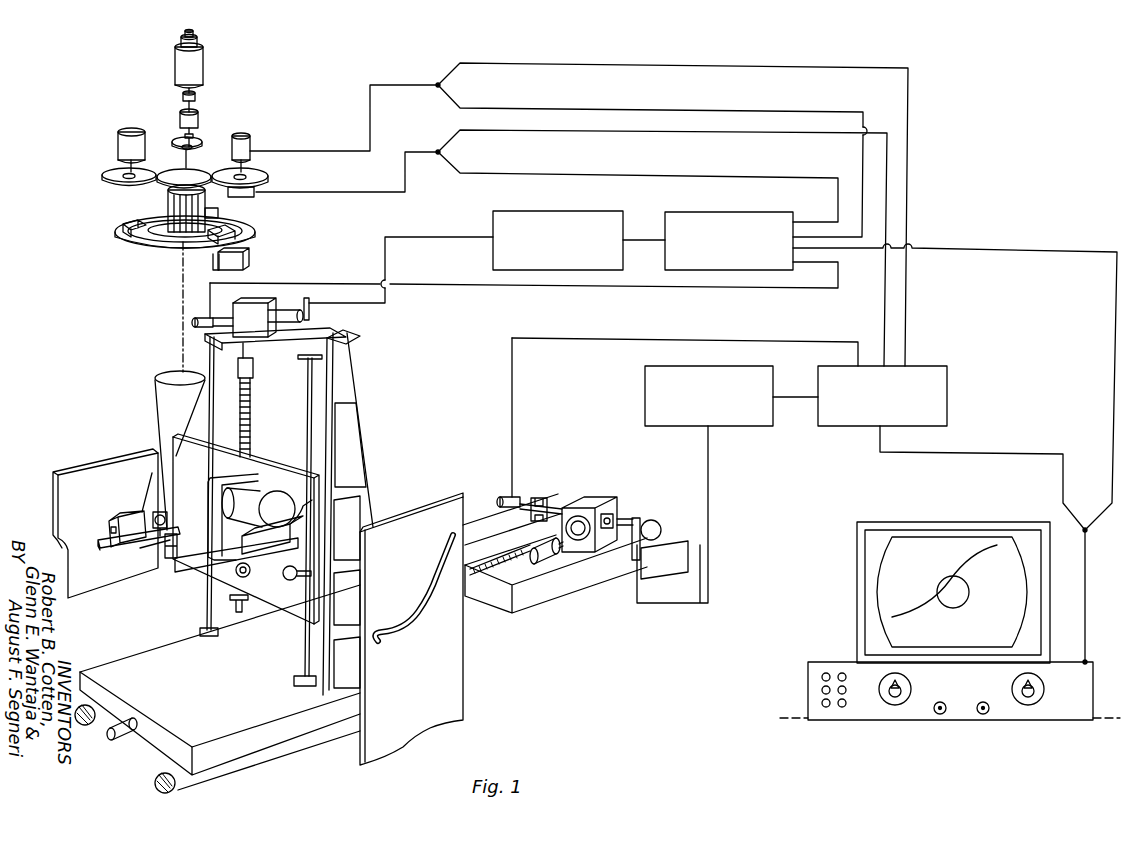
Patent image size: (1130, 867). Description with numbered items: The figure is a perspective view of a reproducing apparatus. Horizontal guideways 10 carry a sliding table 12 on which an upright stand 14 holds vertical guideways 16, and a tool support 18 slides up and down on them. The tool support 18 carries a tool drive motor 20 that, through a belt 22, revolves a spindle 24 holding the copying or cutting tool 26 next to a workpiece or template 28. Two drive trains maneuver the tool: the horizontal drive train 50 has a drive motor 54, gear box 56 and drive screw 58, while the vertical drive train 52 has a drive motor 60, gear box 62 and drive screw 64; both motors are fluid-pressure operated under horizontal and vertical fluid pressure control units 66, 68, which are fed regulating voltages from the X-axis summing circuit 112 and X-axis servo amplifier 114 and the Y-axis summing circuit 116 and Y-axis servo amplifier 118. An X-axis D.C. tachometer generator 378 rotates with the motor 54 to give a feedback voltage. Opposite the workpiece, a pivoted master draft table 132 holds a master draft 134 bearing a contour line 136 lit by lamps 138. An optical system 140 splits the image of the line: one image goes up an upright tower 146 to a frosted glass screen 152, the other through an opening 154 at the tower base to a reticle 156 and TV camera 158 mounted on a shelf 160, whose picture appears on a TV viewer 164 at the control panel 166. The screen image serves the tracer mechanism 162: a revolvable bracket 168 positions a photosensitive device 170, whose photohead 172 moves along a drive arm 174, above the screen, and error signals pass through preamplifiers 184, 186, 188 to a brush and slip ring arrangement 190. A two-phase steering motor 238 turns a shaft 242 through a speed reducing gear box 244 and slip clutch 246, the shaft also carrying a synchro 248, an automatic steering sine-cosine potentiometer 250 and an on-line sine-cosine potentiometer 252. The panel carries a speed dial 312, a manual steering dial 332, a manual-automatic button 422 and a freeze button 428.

The horizontal guideways 10 is at (172, 770).
The table 12 is at (498, 620).
The upright stand 14 is at (363, 430).
The vertical guideways 16 is at (209, 359).
The tool support 18 is at (240, 476).
The tool drive motor 20 is at (258, 492).
The belt 22 is at (200, 558).
The spindle 24 is at (248, 578).
The copying or cutting tool 26 is at (294, 586).
The workpiece or template 28 is at (445, 712).
The horizontal drive train 50 is at (586, 506).
The vertical drive train 52 is at (258, 305).
The drive motor 54 is at (646, 522).
The gear box 56 is at (601, 513).
The drive screw 58 is at (512, 563).
The drive motor 60 is at (263, 337).
The gear box 62 is at (238, 303).
The drive screw 64 is at (251, 396).
The horizontal fluid pressure control unit 66 is at (656, 562).
The vertical fluid pressure control unit 68 is at (313, 313).
The X-axis summing circuit 112 is at (947, 419).
The X-axis servo amplifier 114 is at (735, 428).
The Y-axis summing circuit 116 is at (720, 212).
The Y-axis servo amplifier 118 is at (572, 212).
The master draft table 132 is at (57, 500).
The master draft 134 is at (100, 479).
The contour line 136 is at (140, 500).
The lamps 138 is at (150, 555).
The optical system 140 is at (172, 406).
The upright tower 146 is at (165, 386).
The frosted glass screen 152 is at (178, 378).
The opening 154 is at (166, 512).
The reticle 156 is at (170, 541).
The TV camera 158 is at (126, 518).
The shelf 160 is at (112, 551).
The tracer mechanism 162 is at (116, 246).
The TV viewer 164 is at (860, 541).
The control panel 166 is at (808, 672).
The bracket 168 is at (150, 216).
The photosensitive device 170 is at (250, 258).
The photohead 172 is at (210, 260).
The drive arm 174 is at (170, 246).
The preamplifier 184 is at (122, 226).
The preamplifier 186 is at (237, 236).
The preamplifier 188 is at (219, 212).
The brush and slip ring arrangement 190 is at (178, 206).
The two-phase automatic steering motor 238 is at (199, 66).
The shaft 242 is at (184, 96).
The speed reducing gear box 244 is at (196, 103).
The slip clutch 246 is at (203, 141).
The synchro 248 is at (120, 144).
The automatic steering sine-cosine potentiometer 250 is at (262, 190).
The on-line sine-cosine potentiometer 252 is at (252, 146).
The dial 312 is at (900, 705).
The manual steering control dial 332 is at (1032, 705).
The X-axis D.C. tachometer generator 378 is at (195, 322).
The manual-automatic button 422 is at (940, 715).
The freeze button 428 is at (983, 715).